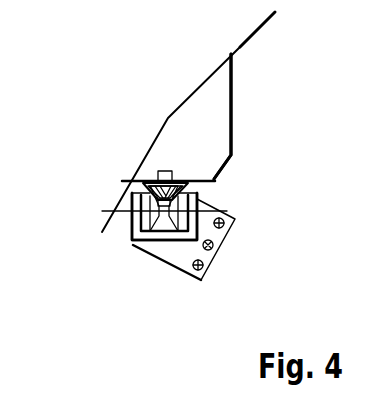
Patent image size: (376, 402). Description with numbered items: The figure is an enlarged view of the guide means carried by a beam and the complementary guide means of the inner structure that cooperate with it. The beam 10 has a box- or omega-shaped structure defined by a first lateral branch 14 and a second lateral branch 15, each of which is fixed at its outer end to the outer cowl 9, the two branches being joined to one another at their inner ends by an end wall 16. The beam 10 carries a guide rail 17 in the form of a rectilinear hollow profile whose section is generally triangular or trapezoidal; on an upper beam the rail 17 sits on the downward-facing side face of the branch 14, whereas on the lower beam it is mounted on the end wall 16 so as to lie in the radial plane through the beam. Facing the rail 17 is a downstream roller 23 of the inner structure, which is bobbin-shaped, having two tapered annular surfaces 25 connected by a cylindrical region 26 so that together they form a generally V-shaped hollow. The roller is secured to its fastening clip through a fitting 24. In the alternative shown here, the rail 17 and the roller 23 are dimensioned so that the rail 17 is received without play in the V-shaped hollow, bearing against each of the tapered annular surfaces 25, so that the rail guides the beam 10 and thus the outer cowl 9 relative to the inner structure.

The outer cowl 9 is at (192, 90).
The first lateral branch 14 is at (143, 181).
The second lateral branch 15 is at (233, 107).
The beam 10 is at (247, 107).
The end wall 16 is at (218, 171).
The guide rail 17 is at (186, 183).
The downstream roller 23 is at (140, 222).
The tapered annular surface 25 is at (97, 260).
The cylindrical region 26 is at (163, 220).
The fitting 24 is at (178, 262).